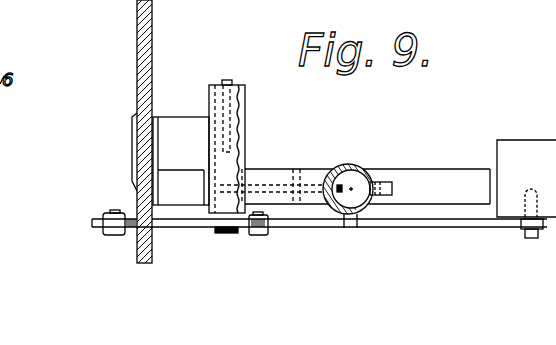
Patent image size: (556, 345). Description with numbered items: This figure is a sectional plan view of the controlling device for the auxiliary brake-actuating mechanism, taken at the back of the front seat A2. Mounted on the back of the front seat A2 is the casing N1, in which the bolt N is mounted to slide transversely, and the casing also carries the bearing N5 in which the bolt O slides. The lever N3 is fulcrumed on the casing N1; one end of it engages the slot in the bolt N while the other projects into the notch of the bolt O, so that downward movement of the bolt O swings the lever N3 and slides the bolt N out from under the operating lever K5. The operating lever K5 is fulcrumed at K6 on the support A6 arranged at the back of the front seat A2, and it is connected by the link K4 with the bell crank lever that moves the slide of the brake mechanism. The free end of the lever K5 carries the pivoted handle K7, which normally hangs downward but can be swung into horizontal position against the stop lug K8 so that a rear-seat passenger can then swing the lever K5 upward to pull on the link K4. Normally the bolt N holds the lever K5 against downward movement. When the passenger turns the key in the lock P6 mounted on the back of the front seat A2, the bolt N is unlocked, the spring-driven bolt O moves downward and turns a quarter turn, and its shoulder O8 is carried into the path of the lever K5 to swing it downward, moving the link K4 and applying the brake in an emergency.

The front seat A2 is at (163, 43).
The lock P6 is at (175, 125).
The casing N1 is at (245, 130).
The lever N3 is at (266, 192).
The bearing N5 is at (341, 166).
The bolt O is at (352, 176).
The shoulder O8 is at (390, 182).
The support A6 is at (516, 148).
The operating lever K5 is at (412, 222).
The fulcrum K6 is at (528, 242).
The link K4 is at (260, 235).
The bolt N is at (220, 233).
The stop lug K8 is at (92, 224).
The handle K7 is at (103, 232).